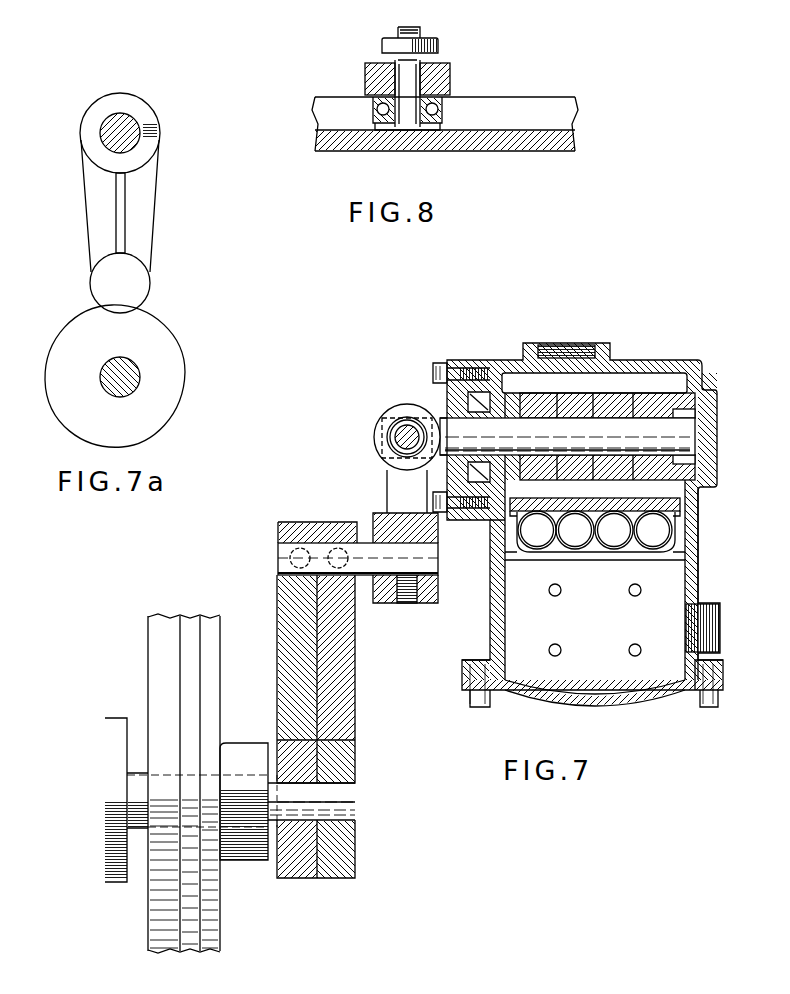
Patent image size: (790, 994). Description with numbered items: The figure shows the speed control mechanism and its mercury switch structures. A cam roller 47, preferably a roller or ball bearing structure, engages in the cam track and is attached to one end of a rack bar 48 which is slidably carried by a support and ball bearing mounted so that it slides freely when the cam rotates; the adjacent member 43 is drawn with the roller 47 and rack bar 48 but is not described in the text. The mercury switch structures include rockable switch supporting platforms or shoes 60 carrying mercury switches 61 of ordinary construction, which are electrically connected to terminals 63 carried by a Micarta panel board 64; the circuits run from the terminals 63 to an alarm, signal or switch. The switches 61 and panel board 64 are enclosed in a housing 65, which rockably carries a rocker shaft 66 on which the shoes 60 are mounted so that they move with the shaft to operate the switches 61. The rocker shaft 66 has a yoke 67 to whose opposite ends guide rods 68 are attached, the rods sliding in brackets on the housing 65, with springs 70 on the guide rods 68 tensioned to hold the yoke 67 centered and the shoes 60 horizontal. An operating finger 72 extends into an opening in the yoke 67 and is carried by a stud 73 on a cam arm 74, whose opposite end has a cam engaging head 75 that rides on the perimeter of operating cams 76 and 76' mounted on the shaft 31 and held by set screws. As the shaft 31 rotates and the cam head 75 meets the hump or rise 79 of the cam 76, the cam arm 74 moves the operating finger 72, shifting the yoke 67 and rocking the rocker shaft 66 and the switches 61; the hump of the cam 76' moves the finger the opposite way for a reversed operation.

In FIG. 7a, the shaft 31 is at (135, 386).
In FIG. 7, the shaft 31 is at (345, 805).
In FIG. 8, the drum / plate 43 is at (487, 107).
In FIG. 7, the drum / plate 43 is at (210, 938).
In FIG. 8, the cam roller 47 is at (378, 121).
In FIG. 8, the rack bar 48 is at (380, 76).
In FIG. 7, the switch supporting platforms or shoes 60 is at (516, 501).
In FIG. 7, the mercury switches 61 is at (575, 549).
In FIG. 7, the terminals 63 is at (551, 645).
In FIG. 7, the panel board 64 is at (640, 670).
In FIG. 7, the housing 65 is at (706, 560).
In FIG. 7, the rocker shaft 66 is at (636, 430).
In FIG. 7, the yoke 67 is at (376, 433).
In FIG. 7, the guide rods 68 is at (406, 424).
In FIG. 7, the springs 70 is at (397, 419).
In FIG. 7, the operating finger 72 is at (400, 495).
In FIG. 7a, the stud 73 is at (110, 128).
In FIG. 7, the stud 73 is at (322, 548).
In FIG. 7a, the cam arm 74 is at (96, 215).
In FIG. 7, the cam arm 74 is at (345, 688).
In FIG. 7a, the cam engaging head 75 is at (138, 283).
In FIG. 7a, the operating cam 76 is at (133, 376).
In FIG. 7, the operating cam 76 is at (344, 813).
In FIG. 7, the operating cam 76' is at (285, 897).
In FIG. 7a, the hump or rise 79 is at (76, 327).